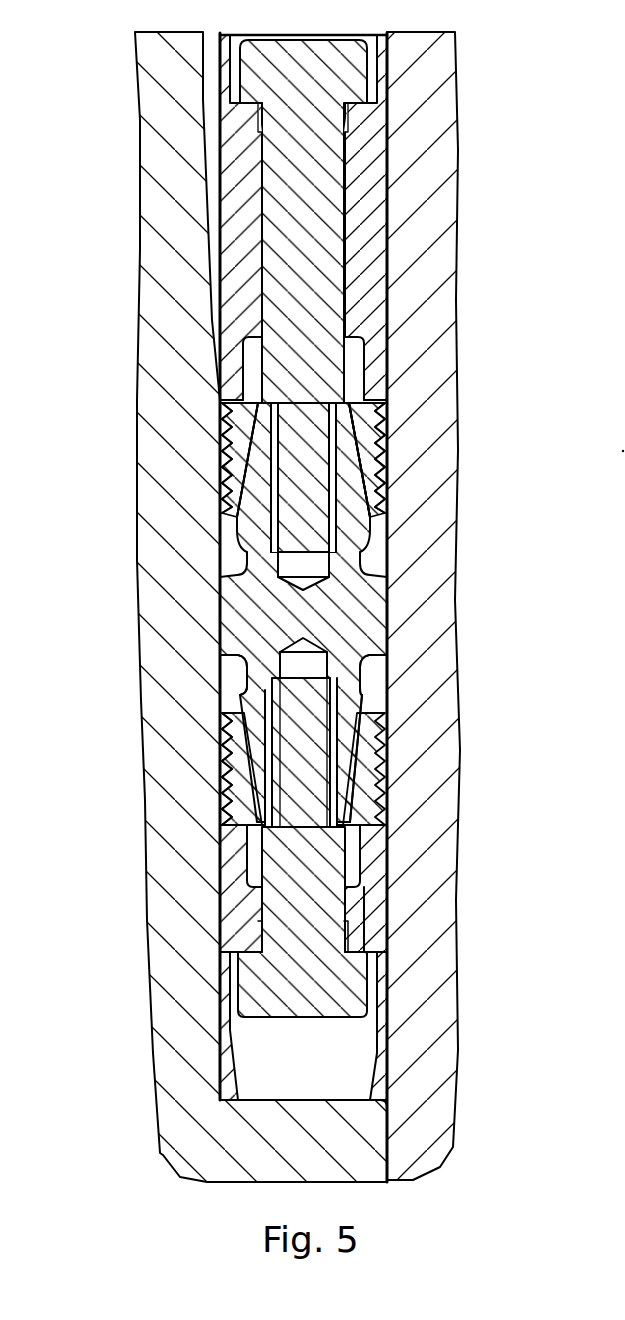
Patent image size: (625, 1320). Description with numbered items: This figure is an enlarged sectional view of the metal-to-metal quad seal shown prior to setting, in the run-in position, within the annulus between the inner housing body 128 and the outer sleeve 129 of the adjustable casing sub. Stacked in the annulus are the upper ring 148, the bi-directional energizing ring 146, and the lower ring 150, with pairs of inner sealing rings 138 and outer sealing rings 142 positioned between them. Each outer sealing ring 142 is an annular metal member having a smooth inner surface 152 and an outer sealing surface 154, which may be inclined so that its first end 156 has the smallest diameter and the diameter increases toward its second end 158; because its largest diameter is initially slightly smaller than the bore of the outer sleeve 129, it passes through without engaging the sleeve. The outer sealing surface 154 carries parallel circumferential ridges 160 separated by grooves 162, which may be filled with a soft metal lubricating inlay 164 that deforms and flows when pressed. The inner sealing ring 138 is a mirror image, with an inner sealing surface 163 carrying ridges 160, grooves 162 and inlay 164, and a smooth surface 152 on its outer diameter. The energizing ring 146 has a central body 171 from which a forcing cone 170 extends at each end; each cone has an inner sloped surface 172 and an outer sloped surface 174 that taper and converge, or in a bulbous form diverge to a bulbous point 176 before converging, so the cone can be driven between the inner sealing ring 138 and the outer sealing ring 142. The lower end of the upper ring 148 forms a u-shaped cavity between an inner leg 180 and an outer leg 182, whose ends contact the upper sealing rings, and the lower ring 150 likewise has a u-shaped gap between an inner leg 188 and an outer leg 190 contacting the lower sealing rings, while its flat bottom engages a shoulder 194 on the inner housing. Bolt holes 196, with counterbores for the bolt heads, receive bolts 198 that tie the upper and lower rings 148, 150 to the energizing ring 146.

The inner housing body 128 is at (210, 1105).
The outer sleeve 129 is at (440, 118).
The inner sealing ring 138 is at (225, 405).
The outer sealing ring 142 is at (373, 433).
The bi-directional energizing ring 146 is at (410, 612).
The upper ring 148 is at (248, 218).
The lower ring 150 is at (385, 1015).
The inner surface 152 is at (255, 472).
The outer sealing surface 154 is at (365, 470).
The first end 156 is at (370, 405).
The second end 158 is at (348, 500).
The ridges 160 is at (235, 428).
The grooves 162 is at (370, 790).
The inner sealing surface 163 is at (230, 452).
The soft metal lubricating plating or inlay 164 is at (240, 747).
The forcing cone 170 is at (240, 803).
The energizing ring body 171 is at (245, 612).
The inner sloped surface 172 is at (240, 782).
The outer sloped surface 174 is at (365, 548).
The bulbous point 176 is at (245, 692).
The inner leg 180 is at (235, 380).
The outer leg 182 is at (368, 352).
The inner leg 188 is at (245, 907).
The outer leg 190 is at (370, 873).
The shoulder 194 is at (313, 1093).
The bolt holes 196 is at (280, 918).
The bolts 198 is at (293, 857).